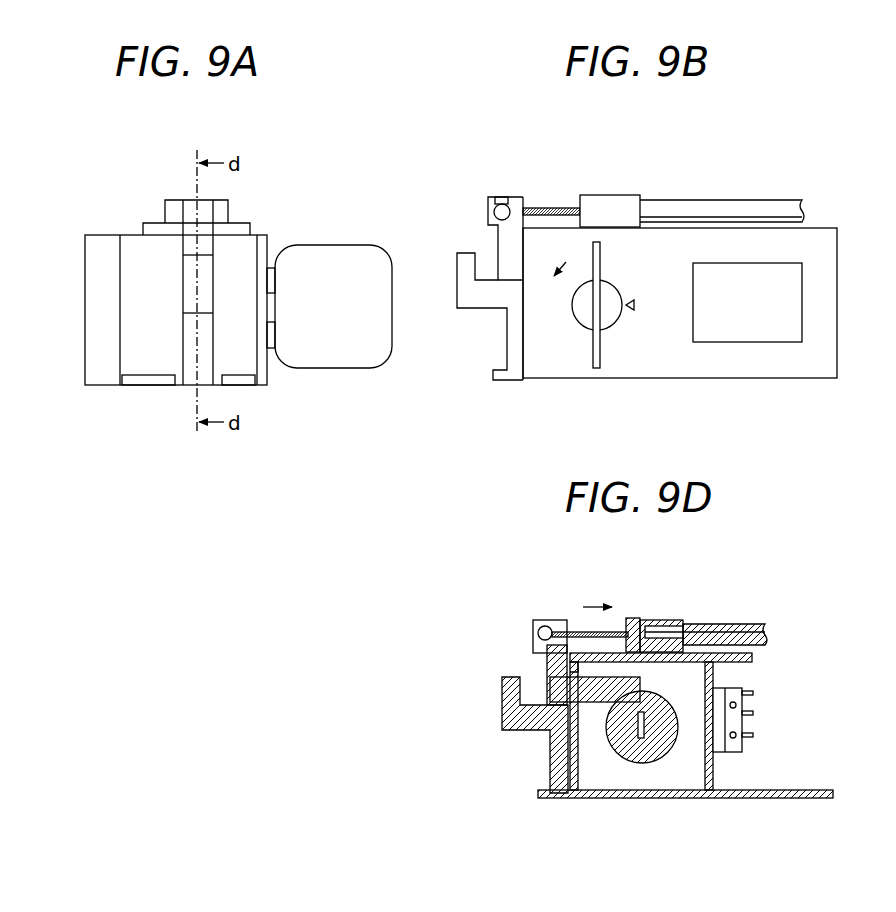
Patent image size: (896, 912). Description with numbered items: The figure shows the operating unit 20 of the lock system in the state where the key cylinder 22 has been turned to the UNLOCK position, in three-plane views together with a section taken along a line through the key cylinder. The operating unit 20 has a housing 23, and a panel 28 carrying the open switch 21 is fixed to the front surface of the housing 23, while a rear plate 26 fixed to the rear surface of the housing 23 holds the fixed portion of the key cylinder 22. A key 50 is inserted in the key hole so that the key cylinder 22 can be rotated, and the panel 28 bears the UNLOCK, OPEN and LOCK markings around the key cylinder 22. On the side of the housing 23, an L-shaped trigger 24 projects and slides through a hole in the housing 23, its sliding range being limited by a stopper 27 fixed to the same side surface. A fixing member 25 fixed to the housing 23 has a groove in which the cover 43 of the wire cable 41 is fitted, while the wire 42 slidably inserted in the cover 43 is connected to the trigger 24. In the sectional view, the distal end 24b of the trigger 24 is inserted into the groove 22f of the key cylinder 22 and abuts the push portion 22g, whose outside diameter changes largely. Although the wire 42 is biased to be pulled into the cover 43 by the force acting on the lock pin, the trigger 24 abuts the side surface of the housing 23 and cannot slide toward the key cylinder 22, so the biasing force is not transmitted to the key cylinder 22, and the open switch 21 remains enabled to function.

In FIG. 9A, the operating unit 20 is at (286, 178).
In FIG. 9B, the operating unit 20 is at (597, 164).
In FIG. 9D, the operating unit 20 is at (724, 592).
In FIG. 9B, the open switch 21 is at (795, 328).
In FIG. 9B, the key cylinder 22 is at (584, 315).
In FIG. 9D, the key cylinder 22 is at (643, 768).
In FIG. 9D, the groove 22f is at (613, 738).
In FIG. 9D, the push portion 22g is at (690, 700).
In FIG. 9A, the housing 23 is at (128, 230).
In FIG. 9D, the housing 23 is at (673, 798).
In FIG. 9A, the trigger 24 is at (213, 247).
In FIG. 9B, the trigger 24 is at (497, 243).
In FIG. 9D, the trigger 24 is at (545, 672).
In FIG. 9D, the distal end 24b is at (625, 674).
In FIG. 9A, the fixing member 25 is at (165, 210).
In FIG. 9B, the fixing member 25 is at (622, 196).
In FIG. 9D, the fixing member 25 is at (630, 618).
In FIG. 9A, the rear plate 26 is at (85, 277).
In FIG. 9A, the stopper 27 is at (183, 342).
In FIG. 9B, the stopper 27 is at (458, 275).
In FIG. 9D, the stopper 27 is at (503, 704).
In FIG. 9A, the panel 28 is at (266, 243).
In FIG. 9B, the panel 28 is at (815, 370).
In FIG. 9B, the wire cable 41 is at (762, 200).
In FIG. 9D, the wire cable 41 is at (752, 623).
In FIG. 9B, the wire 42 is at (555, 208).
In FIG. 9D, the wire 42 is at (577, 630).
In FIG. 9B, the cover 43 is at (692, 200).
In FIG. 9D, the cover 43 is at (697, 620).
In FIG. 9A, the key 50 is at (340, 358).
In FIG. 9B, the key 50 is at (601, 345).